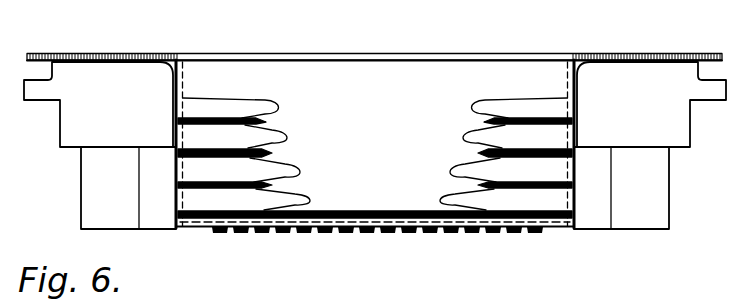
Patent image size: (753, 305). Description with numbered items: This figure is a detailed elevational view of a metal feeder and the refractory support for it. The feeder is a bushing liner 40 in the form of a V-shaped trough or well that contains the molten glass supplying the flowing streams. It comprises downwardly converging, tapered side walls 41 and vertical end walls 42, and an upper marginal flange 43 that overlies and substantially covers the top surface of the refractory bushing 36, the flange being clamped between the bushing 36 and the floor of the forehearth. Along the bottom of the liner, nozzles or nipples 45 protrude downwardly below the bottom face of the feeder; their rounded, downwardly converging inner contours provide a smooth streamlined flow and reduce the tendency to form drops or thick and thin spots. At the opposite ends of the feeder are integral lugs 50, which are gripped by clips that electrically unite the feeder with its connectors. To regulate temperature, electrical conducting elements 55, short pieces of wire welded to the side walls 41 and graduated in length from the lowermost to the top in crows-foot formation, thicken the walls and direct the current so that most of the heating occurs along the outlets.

The bushing liner 40 is at (373, 142).
The upper marginal flange 43 is at (270, 55).
The refractory bushing 36 is at (73, 127).
The lugs 50 is at (88, 205).
The vertical end walls 42 is at (178, 91).
The electrical conducting elements 55 is at (288, 138).
The side walls 41 is at (415, 192).
The nipples 45 is at (308, 233).